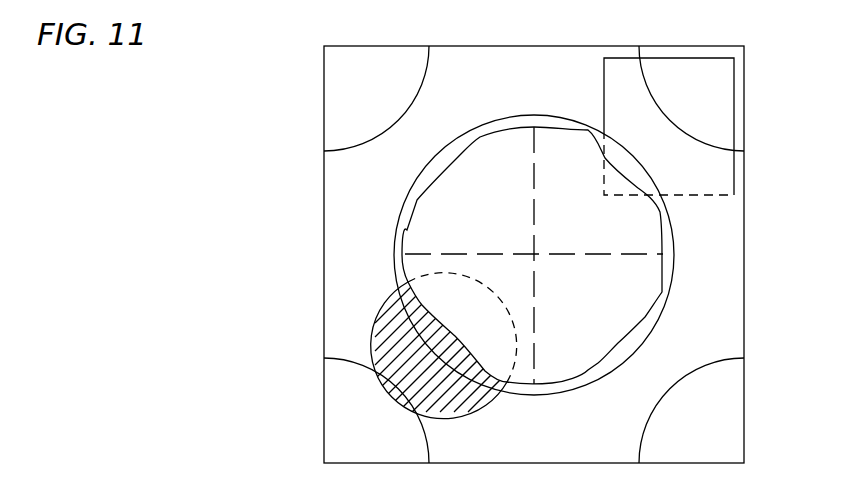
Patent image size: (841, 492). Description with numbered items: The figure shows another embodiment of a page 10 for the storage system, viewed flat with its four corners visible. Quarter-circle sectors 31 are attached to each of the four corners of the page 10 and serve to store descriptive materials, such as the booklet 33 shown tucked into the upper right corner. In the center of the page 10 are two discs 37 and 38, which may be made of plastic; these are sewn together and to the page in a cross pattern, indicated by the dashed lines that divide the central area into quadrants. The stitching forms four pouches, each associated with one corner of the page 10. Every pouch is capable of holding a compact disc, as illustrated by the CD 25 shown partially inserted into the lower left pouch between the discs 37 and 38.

The page 10 is at (543, 85).
The CD 25 is at (471, 404).
The quarter-circle sectors 31 is at (745, 357).
The booklet 33 is at (734, 90).
The disc 37 is at (501, 116).
The disc 38 is at (661, 294).